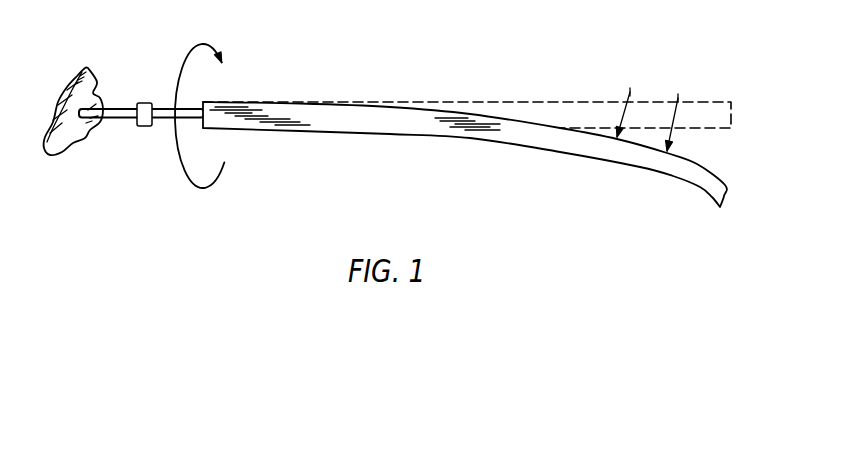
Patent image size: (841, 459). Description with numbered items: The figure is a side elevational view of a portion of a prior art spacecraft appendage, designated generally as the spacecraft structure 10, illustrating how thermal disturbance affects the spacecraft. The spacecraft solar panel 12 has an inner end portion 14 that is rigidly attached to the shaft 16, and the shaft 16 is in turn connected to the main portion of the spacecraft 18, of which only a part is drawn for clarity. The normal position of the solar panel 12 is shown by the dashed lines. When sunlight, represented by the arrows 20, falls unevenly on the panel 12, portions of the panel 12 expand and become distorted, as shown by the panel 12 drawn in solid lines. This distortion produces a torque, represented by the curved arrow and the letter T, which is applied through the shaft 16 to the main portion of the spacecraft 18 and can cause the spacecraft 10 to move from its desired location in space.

The spacecraft structure 10 is at (405, 107).
The spacecraft solar panel 12 is at (482, 120).
The inner end portion 14 is at (214, 103).
The shaft 16 is at (115, 110).
The main portion of the spacecraft 18 is at (97, 88).
The arrows 20 is at (678, 98).
The torque T is at (211, 116).